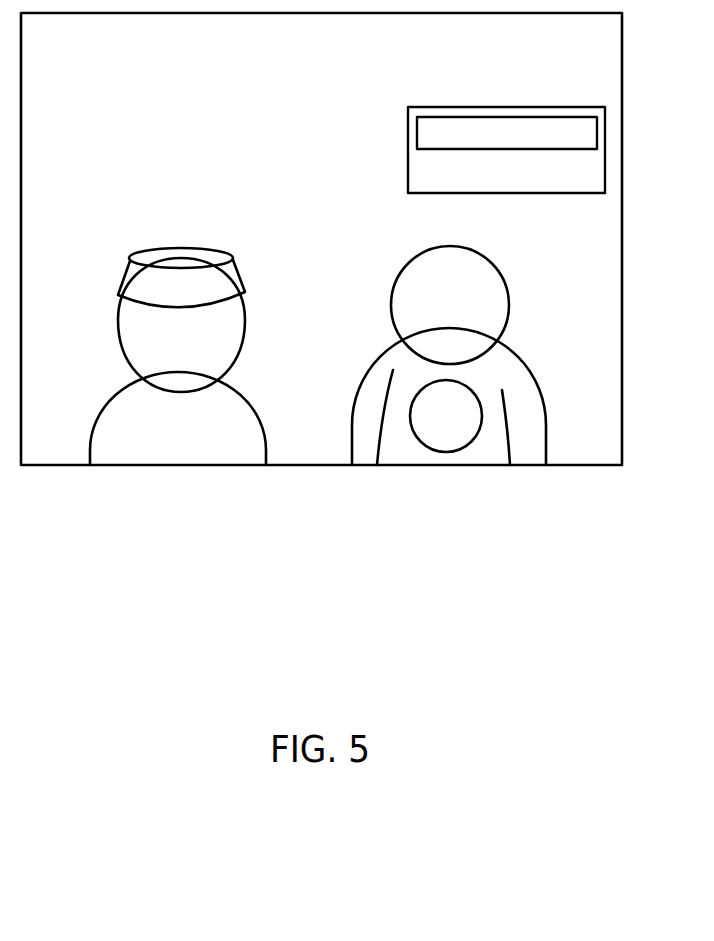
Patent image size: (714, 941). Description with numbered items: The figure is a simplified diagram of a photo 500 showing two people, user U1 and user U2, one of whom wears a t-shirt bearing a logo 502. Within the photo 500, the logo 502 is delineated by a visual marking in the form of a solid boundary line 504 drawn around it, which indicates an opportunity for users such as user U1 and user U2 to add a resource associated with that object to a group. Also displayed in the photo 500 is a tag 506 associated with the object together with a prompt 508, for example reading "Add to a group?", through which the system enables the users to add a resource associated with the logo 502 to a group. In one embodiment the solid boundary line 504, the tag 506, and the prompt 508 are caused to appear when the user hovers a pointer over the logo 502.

The photo 500 is at (340, 614).
The tag 506 is at (597, 118).
The prompt 508 is at (525, 178).
The user U1 is at (245, 315).
The user U2 is at (507, 310).
The logo 502 is at (420, 410).
The solid boundary line 504 is at (473, 388).